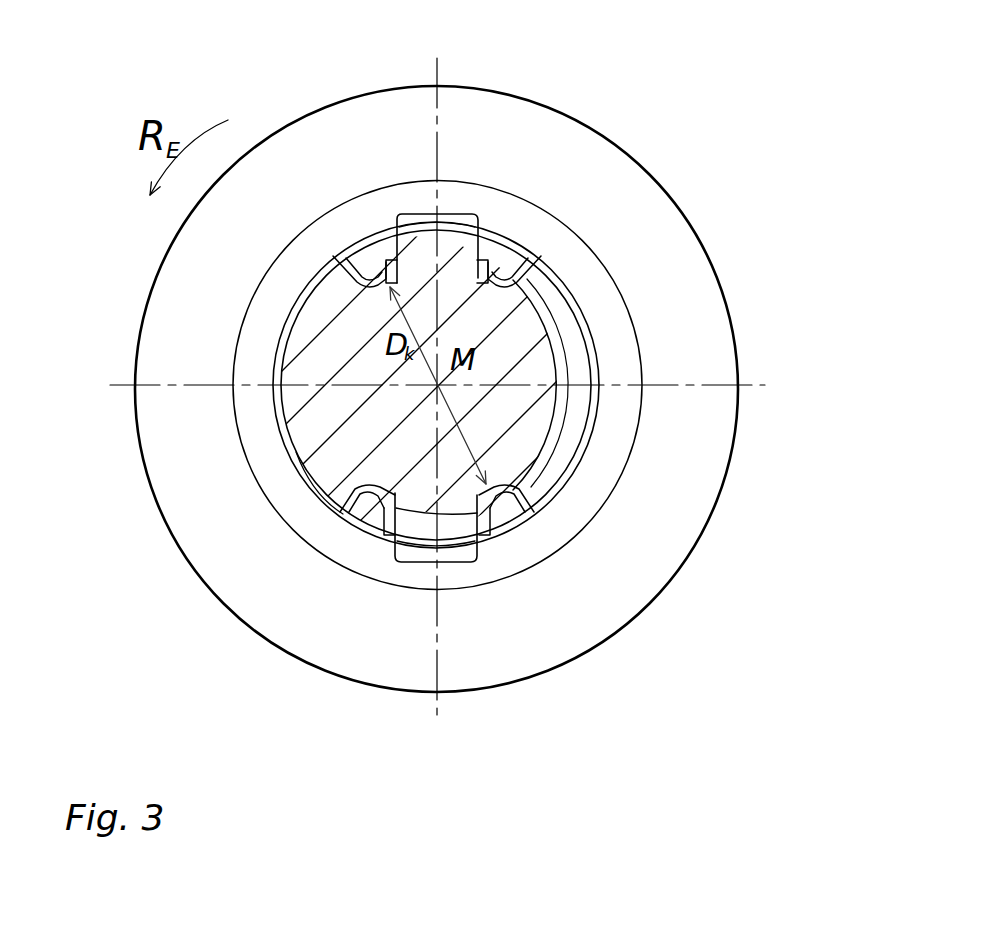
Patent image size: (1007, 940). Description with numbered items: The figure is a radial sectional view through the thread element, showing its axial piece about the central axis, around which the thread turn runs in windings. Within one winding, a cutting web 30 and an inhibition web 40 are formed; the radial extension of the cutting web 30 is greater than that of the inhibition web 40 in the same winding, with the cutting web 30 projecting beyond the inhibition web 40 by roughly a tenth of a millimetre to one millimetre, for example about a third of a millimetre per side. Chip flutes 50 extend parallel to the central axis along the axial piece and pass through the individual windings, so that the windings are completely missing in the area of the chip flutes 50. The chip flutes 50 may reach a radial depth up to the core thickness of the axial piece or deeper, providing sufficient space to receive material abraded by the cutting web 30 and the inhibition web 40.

The cutting web 30 is at (421, 213).
The inhibition web 40 is at (283, 318).
The chip flute 50 is at (380, 250).